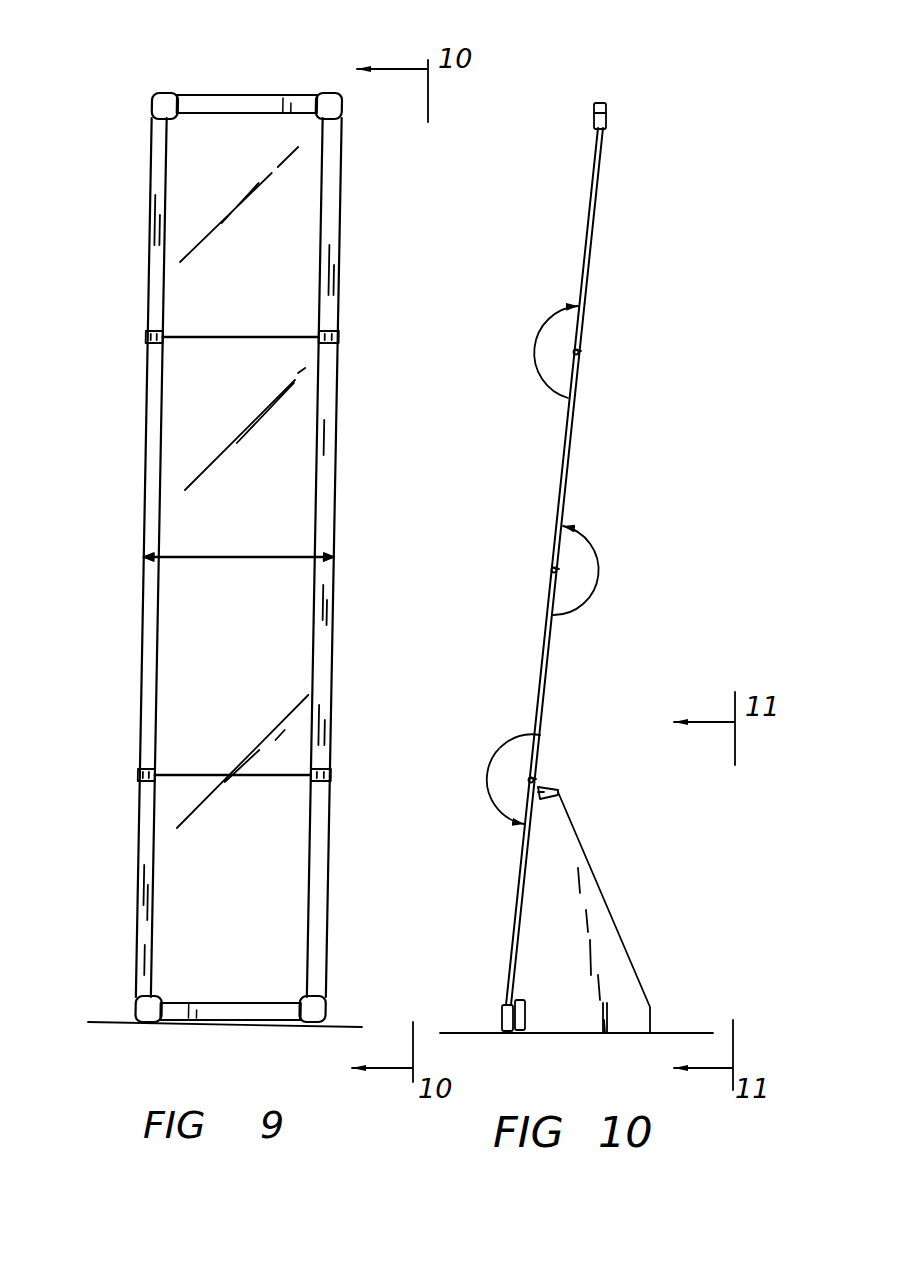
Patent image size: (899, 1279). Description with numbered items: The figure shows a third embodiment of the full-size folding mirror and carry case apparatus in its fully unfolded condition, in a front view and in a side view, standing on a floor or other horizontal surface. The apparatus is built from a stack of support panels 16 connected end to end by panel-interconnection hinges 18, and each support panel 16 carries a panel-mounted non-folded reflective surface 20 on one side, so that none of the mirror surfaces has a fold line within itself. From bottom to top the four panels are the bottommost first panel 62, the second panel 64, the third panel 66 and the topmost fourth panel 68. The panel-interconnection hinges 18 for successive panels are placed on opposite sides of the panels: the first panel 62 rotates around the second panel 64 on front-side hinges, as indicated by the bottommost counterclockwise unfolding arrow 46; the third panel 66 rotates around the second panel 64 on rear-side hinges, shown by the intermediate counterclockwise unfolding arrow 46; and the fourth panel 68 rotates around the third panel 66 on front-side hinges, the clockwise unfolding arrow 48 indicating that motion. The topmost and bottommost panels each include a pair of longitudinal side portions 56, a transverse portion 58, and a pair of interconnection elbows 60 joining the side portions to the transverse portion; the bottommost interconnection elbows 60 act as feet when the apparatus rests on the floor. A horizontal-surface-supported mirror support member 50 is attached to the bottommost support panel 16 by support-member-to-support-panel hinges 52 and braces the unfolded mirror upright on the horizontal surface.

In FIG. 9, the support panel 16 is at (346, 269).
In FIG. 10, the support panel 16 is at (586, 241).
In FIG. 9, the panel-interconnection hinge 18 is at (150, 332).
In FIG. 10, the panel-interconnection hinge 18 is at (575, 348).
In FIG. 9, the panel-mounted non-folded reflective surface 20 is at (297, 213).
In FIG. 10, the counter-clockwise unfolding arrow 46 is at (598, 560).
In FIG. 10, the clockwise unfolding arrow 48 is at (531, 330).
In FIG. 10, the horizontal-surface-supported mirror support member 50 is at (608, 957).
In FIG. 10, the support-member-to-support-panel hinge 52 is at (558, 793).
In FIG. 9, the longitudinal side portion 56 is at (152, 165).
In FIG. 9, the transverse portion 58 is at (225, 96).
In FIG. 9, the interconnection elbow 60 is at (158, 100).
In FIG. 10, the interconnection elbow 60 is at (610, 113).
In FIG. 9, the bottommost first panel 62 is at (125, 841).
In FIG. 10, the bottommost first panel 62 is at (526, 912).
In FIG. 9, the second panel 64 is at (130, 654).
In FIG. 10, the second panel 64 is at (556, 659).
In FIG. 9, the third panel 66 is at (141, 401).
In FIG. 10, the third panel 66 is at (582, 440).
In FIG. 9, the topmost fourth panel 68 is at (140, 236).
In FIG. 10, the topmost fourth panel 68 is at (614, 183).